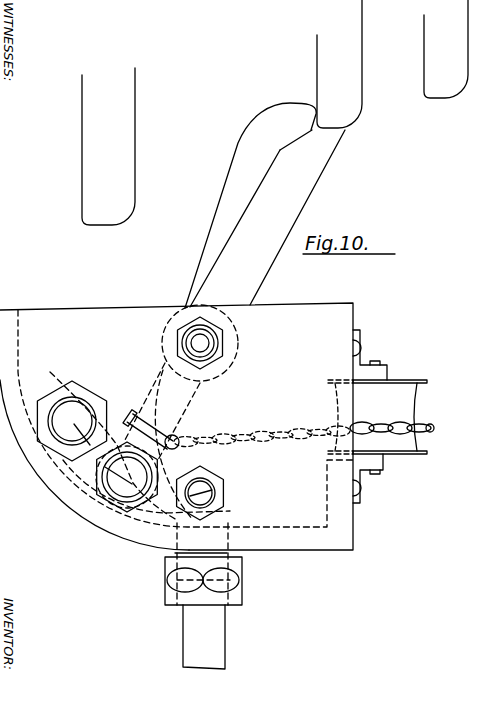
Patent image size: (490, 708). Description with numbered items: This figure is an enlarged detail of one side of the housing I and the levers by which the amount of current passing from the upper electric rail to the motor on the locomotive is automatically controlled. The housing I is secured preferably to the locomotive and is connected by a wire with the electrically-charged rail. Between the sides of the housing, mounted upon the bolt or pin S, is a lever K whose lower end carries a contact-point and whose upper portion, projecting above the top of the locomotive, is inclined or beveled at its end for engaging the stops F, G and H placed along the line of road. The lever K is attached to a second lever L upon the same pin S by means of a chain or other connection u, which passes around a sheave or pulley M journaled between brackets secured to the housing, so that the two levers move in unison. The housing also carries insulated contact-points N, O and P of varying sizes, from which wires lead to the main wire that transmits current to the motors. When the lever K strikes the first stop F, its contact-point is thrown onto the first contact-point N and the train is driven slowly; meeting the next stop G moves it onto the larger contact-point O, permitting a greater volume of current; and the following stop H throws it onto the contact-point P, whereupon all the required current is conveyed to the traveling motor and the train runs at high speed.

The stop H is at (108, 146).
The stop G is at (339, 64).
The stop F is at (446, 49).
The second lever L is at (250, 205).
The lever K is at (284, 217).
The housing I is at (308, 381).
The bolt or pin S is at (200, 343).
The contact-point P is at (71, 421).
The contact-point O is at (120, 490).
The contact-point N is at (222, 484).
The sheave or pulley M is at (475, 398).
The chain u is at (433, 431).